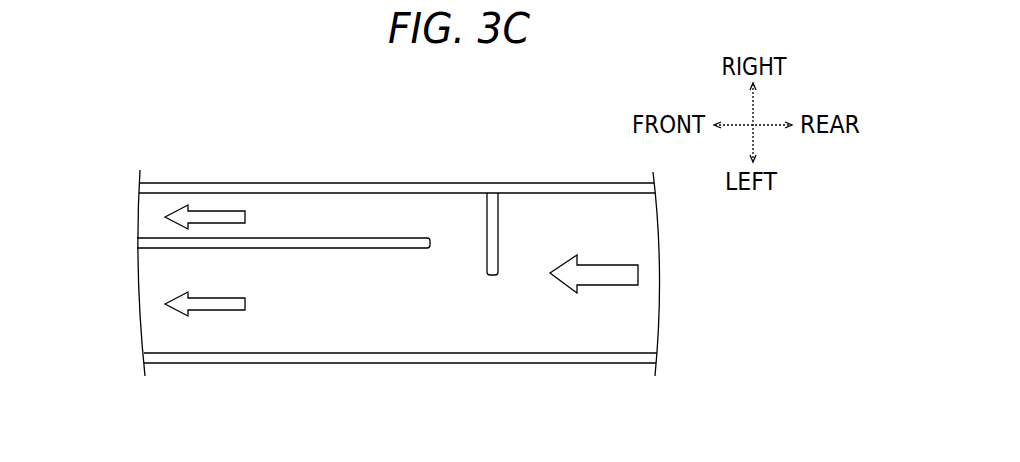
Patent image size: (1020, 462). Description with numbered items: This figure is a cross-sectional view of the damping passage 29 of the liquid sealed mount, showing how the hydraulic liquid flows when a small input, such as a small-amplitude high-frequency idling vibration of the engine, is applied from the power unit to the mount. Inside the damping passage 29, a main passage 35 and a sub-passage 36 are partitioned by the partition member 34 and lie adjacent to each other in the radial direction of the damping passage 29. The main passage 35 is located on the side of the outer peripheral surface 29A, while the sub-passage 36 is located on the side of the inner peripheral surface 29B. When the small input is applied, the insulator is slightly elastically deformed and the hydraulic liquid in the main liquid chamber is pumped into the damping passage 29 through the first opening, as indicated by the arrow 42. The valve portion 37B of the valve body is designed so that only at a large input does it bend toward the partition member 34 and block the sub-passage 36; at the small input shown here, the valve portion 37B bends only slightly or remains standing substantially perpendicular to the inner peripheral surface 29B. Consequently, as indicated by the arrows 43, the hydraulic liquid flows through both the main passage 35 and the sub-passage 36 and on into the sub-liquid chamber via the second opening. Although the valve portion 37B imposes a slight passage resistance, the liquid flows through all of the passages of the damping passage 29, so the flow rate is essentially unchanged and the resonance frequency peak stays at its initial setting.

The damping passage 29 is at (433, 129).
The outer peripheral surface 29A is at (497, 353).
The inner peripheral surface 29B is at (440, 201).
The partition member 34 is at (143, 228).
The main passage 35 is at (348, 319).
The sub-passage 36 is at (349, 227).
The valve portion 37B is at (498, 228).
The arrow 42 is at (594, 286).
The arrow 43 is at (203, 209).